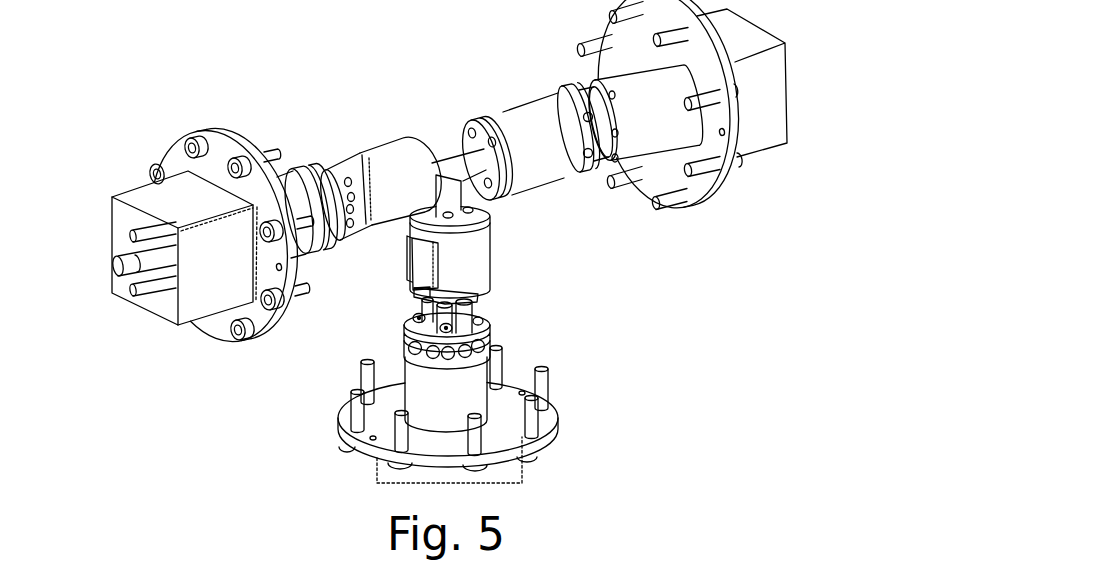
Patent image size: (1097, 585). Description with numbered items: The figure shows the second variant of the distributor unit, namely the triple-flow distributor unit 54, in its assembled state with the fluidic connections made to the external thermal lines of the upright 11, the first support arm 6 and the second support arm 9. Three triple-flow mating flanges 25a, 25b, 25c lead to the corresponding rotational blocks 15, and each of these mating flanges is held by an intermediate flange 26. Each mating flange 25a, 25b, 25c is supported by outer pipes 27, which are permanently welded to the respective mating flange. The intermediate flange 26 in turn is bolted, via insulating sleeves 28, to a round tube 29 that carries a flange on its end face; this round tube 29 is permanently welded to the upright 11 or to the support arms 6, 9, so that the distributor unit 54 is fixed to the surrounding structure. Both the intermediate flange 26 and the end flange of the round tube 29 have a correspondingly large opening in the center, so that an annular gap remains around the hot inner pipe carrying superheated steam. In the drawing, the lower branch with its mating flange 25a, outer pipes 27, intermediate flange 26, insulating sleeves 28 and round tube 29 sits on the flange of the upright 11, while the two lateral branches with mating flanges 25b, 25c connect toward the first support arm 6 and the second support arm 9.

The triple-flow distributor unit 54 is at (411, 64).
The mating flange 25c is at (352, 155).
The mating flange 25b is at (551, 105).
The mating flange 25a is at (422, 284).
The rotational block 15 is at (428, 259).
The outer pipes 27 is at (470, 304).
The intermediate flange 26 is at (490, 332).
The insulating sleeves 28 is at (488, 343).
The round tube 29 is at (404, 395).
The upright 11 is at (555, 421).
The second support arm 9 is at (210, 330).
The first support arm 6 is at (703, 207).